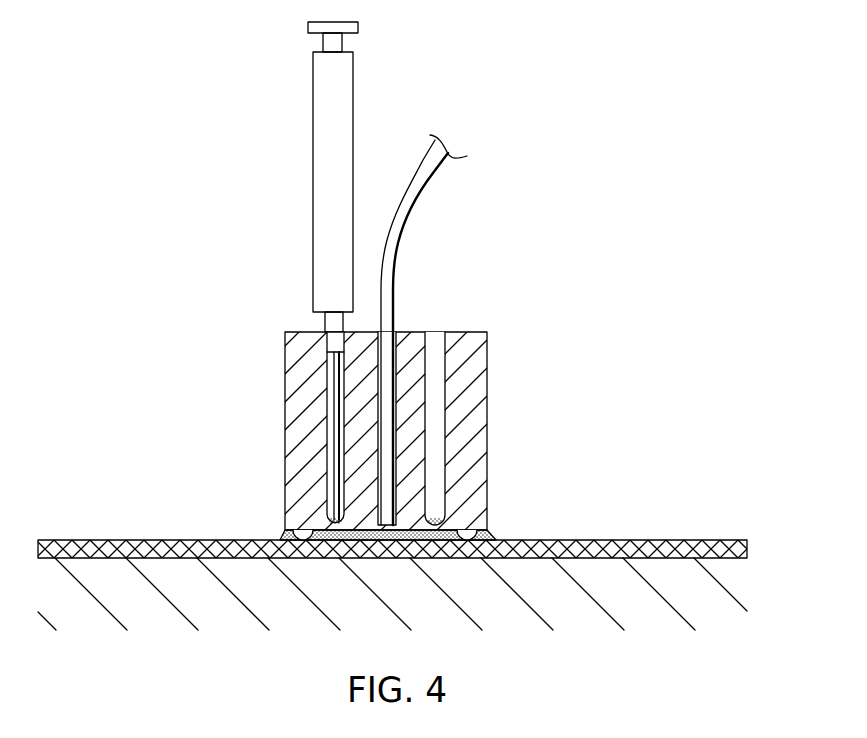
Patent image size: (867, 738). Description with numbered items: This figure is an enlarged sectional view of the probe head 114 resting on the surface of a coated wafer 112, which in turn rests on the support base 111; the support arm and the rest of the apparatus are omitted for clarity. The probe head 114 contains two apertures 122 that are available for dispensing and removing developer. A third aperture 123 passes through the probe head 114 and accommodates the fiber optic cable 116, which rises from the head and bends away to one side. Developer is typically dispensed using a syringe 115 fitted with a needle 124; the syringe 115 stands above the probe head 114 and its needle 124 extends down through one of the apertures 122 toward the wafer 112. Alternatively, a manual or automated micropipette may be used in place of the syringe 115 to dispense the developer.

The support base 111 is at (433, 610).
The coated wafer 112 is at (607, 539).
The probe head 114 is at (487, 377).
The syringe 115 is at (313, 172).
The fiber optic cable 116 is at (402, 238).
The apertures 122 is at (327, 445).
The third aperture 123 is at (396, 348).
The needle 124 is at (332, 386).